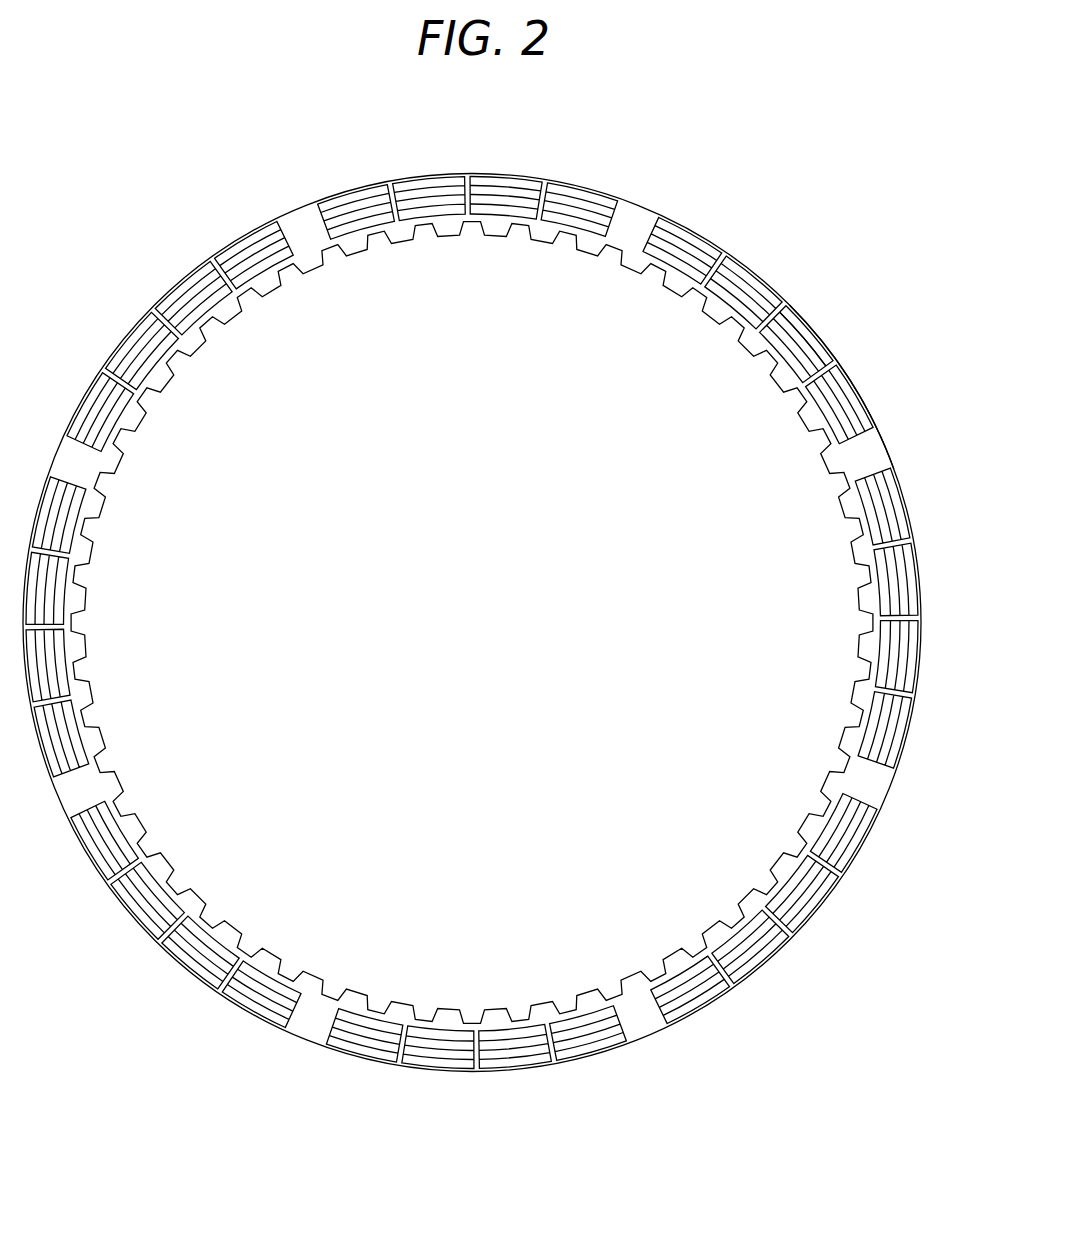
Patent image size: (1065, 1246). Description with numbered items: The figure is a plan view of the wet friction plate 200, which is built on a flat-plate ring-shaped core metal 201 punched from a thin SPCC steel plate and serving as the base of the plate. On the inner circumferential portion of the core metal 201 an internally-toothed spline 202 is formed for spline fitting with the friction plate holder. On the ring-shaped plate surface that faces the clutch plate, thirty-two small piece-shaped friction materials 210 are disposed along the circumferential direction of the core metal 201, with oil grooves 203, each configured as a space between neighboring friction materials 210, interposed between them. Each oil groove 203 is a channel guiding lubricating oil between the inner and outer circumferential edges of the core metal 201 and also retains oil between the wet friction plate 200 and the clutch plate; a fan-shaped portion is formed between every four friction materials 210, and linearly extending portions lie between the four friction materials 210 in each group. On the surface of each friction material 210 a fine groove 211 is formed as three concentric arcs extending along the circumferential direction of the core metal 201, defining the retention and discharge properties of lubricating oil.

The wet friction plate 200 is at (183, 173).
The core metal 201 is at (883, 442).
The internally-toothed spline 202 is at (840, 478).
The oil groove 203 is at (633, 218).
The friction material 210 is at (855, 390).
The fine groove 211 is at (810, 338).